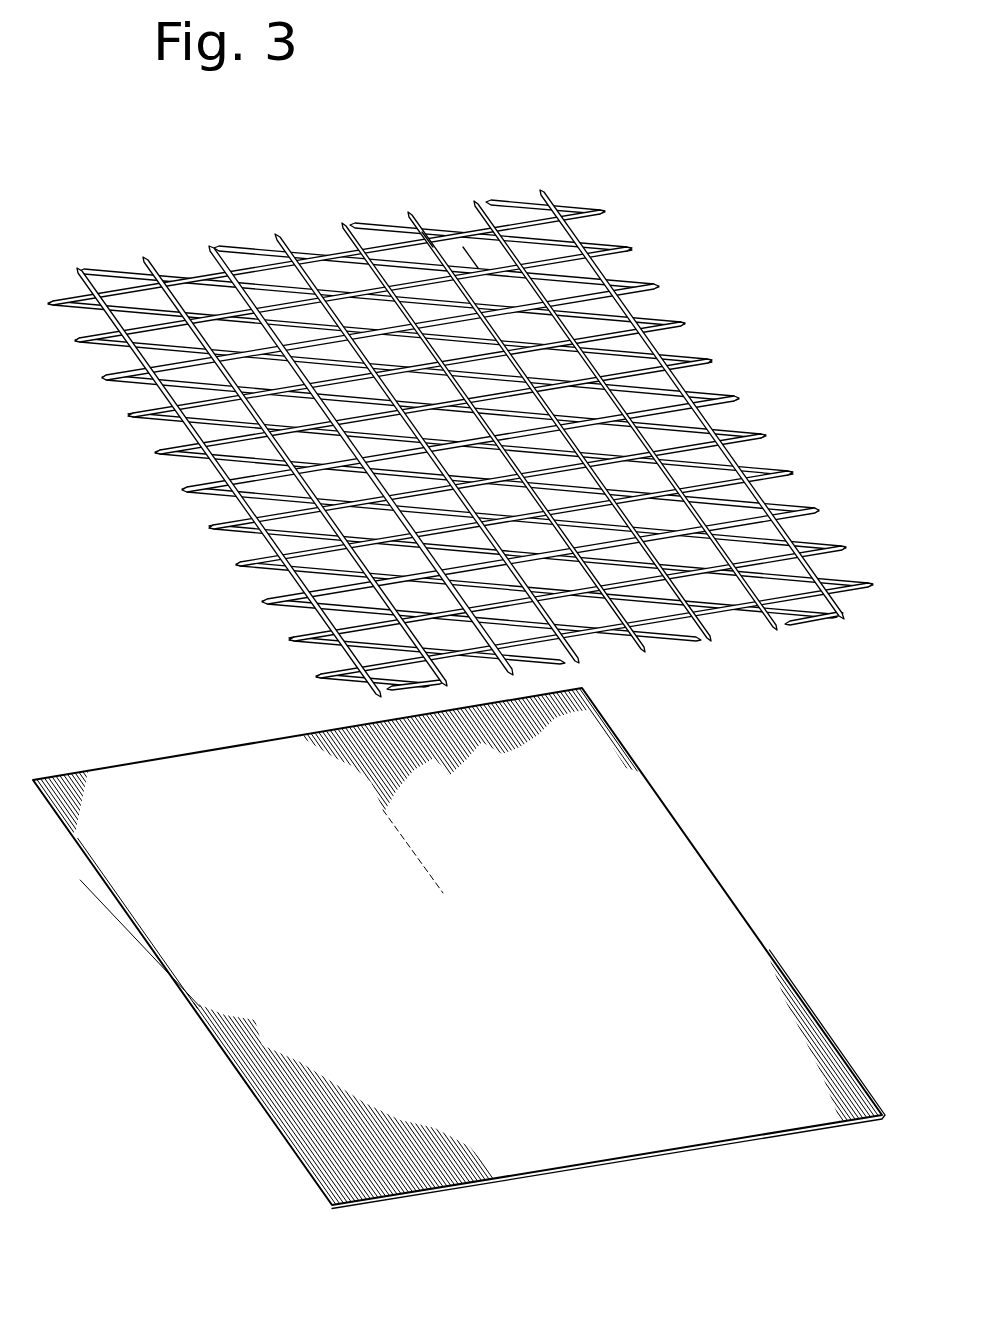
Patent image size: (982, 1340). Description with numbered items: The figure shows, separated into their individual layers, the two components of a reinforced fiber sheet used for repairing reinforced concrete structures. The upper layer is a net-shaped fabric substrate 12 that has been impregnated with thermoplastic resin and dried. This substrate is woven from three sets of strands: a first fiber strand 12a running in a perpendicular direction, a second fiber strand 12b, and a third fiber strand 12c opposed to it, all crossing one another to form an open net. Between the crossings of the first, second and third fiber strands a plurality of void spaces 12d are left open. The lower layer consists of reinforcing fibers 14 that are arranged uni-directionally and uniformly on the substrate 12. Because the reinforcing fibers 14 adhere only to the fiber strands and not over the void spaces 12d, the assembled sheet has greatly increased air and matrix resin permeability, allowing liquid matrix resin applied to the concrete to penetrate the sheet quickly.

The net-shaped fabric substrate 12 is at (460, 413).
The first fiber strand 12a is at (277, 240).
The second fiber strand 12b is at (213, 267).
The third fiber strand 12c is at (268, 239).
The void spaces 12d is at (476, 257).
The reinforcing fibers 14 is at (753, 927).